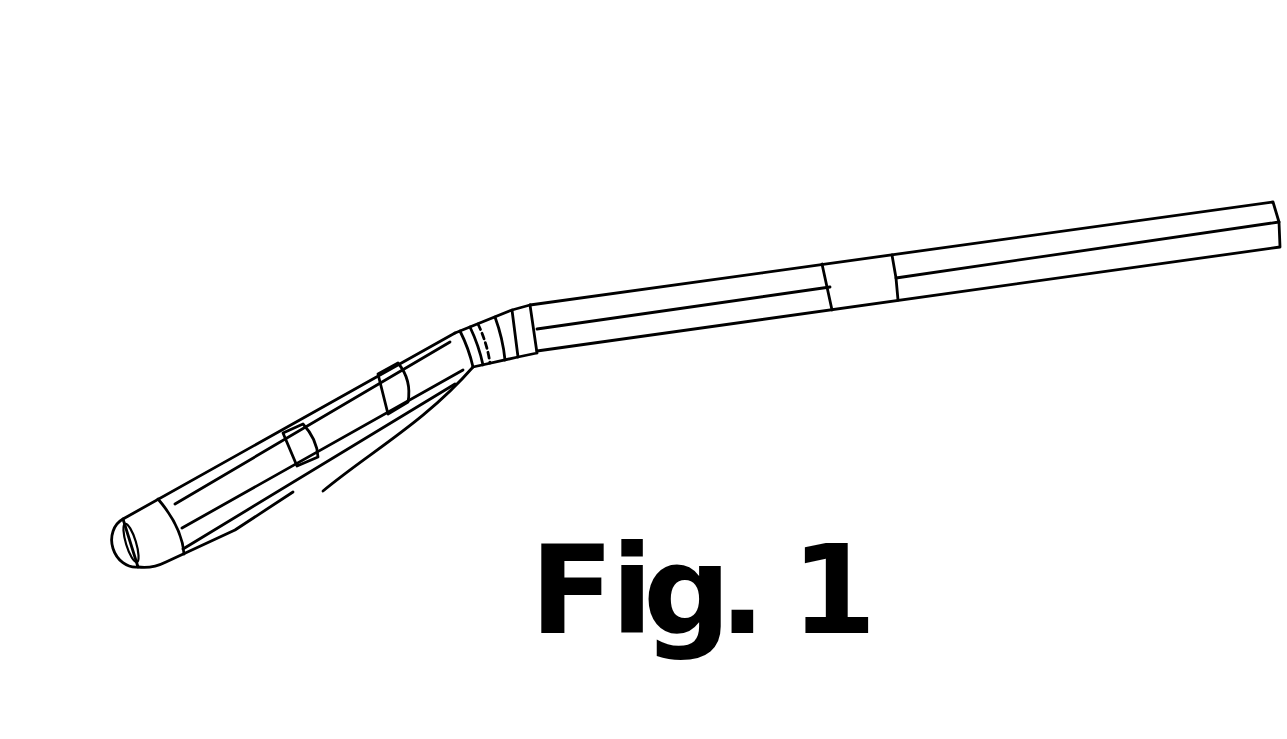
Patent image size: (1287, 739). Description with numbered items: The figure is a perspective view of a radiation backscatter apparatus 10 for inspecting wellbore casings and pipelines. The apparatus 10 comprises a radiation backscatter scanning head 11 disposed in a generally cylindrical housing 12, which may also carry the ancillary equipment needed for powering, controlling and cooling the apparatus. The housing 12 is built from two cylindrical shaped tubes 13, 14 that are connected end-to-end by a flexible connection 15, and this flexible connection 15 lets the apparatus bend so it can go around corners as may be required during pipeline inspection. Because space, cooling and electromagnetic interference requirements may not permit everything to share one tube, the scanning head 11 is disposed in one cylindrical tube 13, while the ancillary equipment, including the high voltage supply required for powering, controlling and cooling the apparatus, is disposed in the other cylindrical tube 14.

The apparatus 10 is at (572, 158).
The radiation backscatter scanning head 11 is at (293, 492).
The generally cylindrical housing 12 is at (408, 348).
The cylindrical shaped tube 13 is at (252, 448).
The cylindrical shaped tube 14 is at (633, 330).
The flexible connection 15 is at (490, 307).